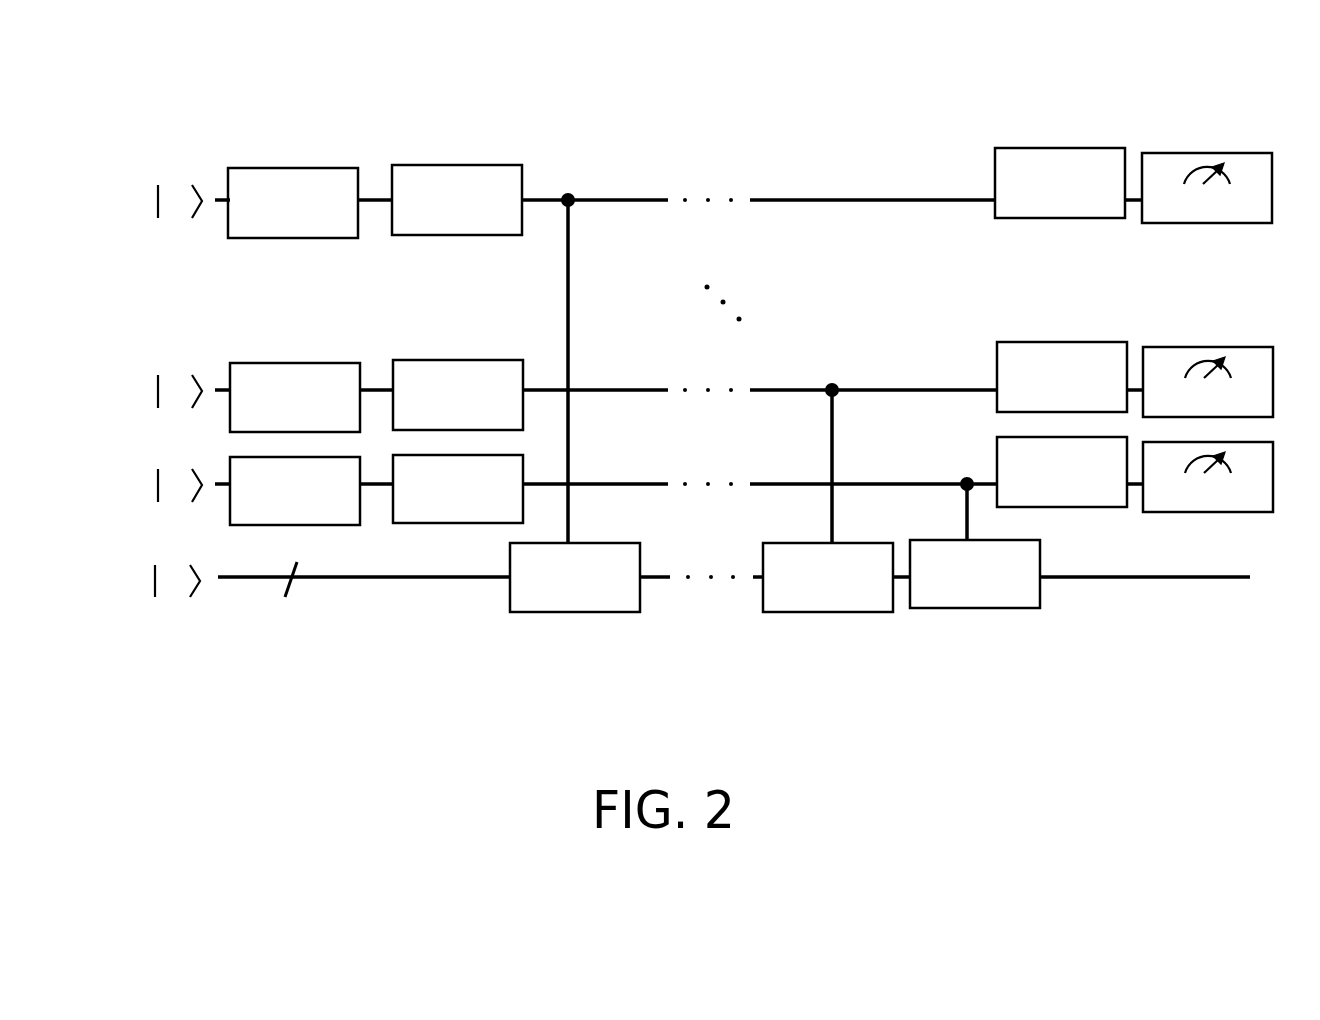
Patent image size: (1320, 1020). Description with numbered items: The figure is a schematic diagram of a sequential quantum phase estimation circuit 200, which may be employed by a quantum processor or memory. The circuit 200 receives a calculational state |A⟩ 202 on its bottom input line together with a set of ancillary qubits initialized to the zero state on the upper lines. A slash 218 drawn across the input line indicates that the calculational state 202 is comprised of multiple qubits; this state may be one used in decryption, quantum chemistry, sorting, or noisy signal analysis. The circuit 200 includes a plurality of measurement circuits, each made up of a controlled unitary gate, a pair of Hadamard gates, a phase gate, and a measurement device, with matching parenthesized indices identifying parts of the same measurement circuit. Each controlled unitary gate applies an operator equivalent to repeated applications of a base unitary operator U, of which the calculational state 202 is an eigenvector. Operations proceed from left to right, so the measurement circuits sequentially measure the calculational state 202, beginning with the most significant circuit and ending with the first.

The sequential quantum phase estimation circuit 200 is at (1103, 94).
The calculational state 202 is at (177, 593).
The slash 218 is at (287, 595).